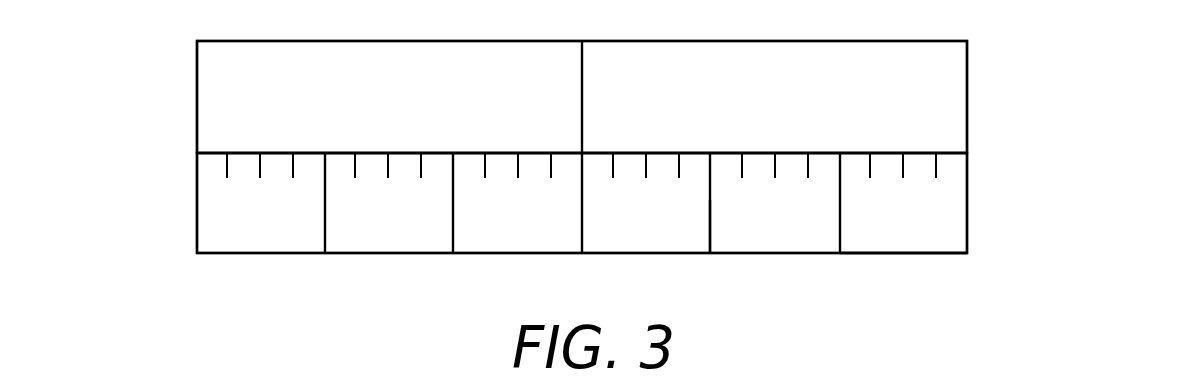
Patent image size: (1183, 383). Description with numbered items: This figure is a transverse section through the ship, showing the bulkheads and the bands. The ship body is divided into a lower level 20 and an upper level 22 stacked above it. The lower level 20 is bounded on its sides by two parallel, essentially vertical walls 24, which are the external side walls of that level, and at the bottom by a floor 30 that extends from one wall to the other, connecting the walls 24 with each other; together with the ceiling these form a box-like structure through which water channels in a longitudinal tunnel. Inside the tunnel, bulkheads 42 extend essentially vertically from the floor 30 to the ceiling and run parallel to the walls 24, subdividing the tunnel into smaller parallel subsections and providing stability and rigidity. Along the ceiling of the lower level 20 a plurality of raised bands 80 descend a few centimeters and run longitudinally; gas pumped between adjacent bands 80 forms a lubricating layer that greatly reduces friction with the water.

The lower level 20 is at (1000, 225).
The upper level 22 is at (1017, 87).
The walls 24 is at (197, 203).
The floor 30 is at (882, 253).
The bulkhead 42 is at (710, 223).
The raised bands 80 is at (388, 166).